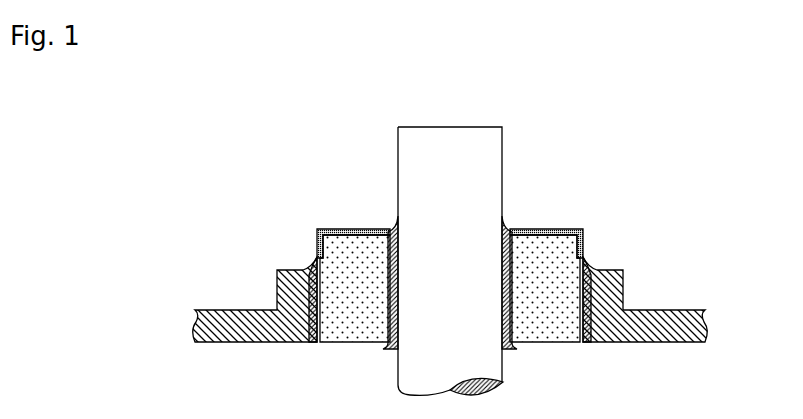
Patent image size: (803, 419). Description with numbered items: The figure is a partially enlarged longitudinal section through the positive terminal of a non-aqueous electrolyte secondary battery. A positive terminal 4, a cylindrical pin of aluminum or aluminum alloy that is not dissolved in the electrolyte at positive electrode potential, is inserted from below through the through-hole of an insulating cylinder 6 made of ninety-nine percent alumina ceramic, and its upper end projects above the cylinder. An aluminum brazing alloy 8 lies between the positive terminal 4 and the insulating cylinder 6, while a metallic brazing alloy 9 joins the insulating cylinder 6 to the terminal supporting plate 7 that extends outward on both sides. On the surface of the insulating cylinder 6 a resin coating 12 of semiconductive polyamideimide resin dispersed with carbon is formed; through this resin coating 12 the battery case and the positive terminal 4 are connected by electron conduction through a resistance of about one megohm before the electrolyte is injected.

The positive terminal 4 is at (497, 150).
The terminal supporting plate 7 is at (232, 311).
The metallic brazing alloy 9 is at (313, 268).
The resin coating 12 is at (577, 165).
The insulating cylinder 6 is at (337, 232).
The aluminum brazing alloy 8 is at (395, 230).